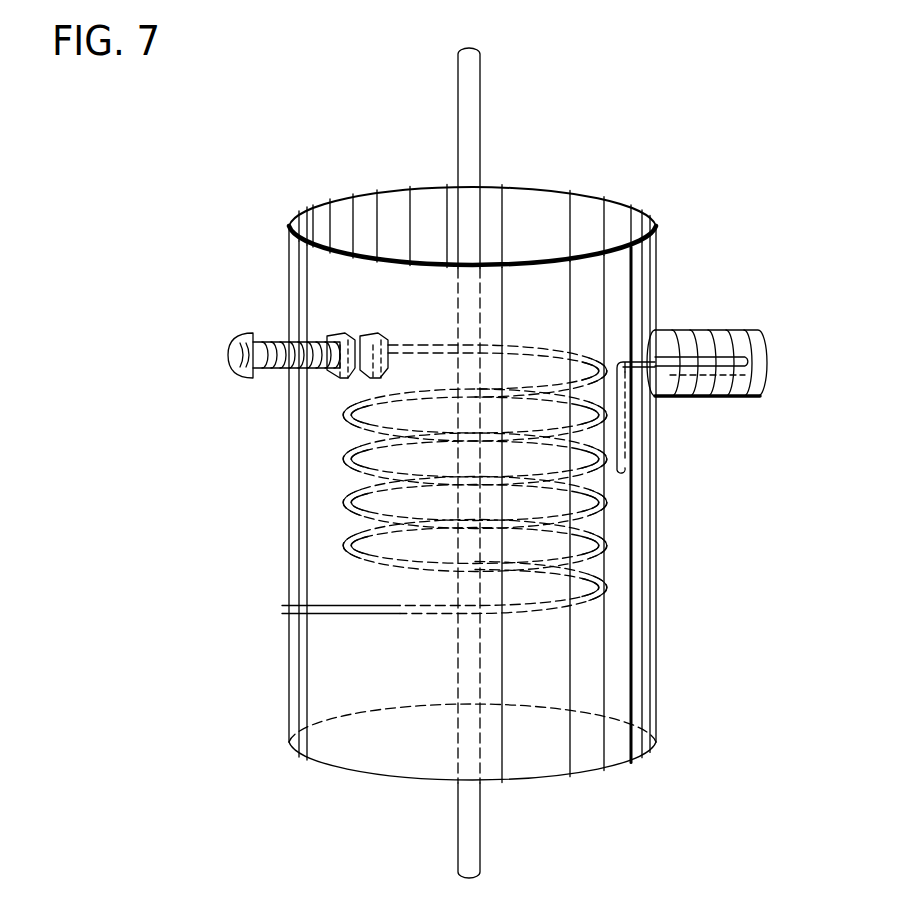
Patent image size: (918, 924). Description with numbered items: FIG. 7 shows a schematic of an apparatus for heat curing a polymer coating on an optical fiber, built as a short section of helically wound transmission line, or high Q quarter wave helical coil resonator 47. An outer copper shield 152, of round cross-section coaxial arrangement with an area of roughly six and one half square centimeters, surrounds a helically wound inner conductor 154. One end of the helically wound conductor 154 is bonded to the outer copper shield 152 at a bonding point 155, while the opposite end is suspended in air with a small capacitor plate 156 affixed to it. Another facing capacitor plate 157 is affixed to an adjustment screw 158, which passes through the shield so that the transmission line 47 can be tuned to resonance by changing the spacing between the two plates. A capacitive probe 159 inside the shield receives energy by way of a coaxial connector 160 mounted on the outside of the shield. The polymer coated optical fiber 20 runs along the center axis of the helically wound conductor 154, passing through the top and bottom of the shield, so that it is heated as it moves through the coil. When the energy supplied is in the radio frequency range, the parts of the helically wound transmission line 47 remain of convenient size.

The helical coil resonator 47 is at (325, 71).
The polymer coated optical fiber 20 is at (486, 127).
The outer copper shield 152 is at (652, 637).
The helically wound inner conductor 154 is at (578, 550).
The bonding point 155 is at (282, 610).
The capacitor plate 156 is at (374, 342).
The facing capacitor plate 157 is at (352, 348).
The adjustment screw 158 is at (225, 364).
The capacitive probe 159 is at (628, 452).
The coaxial connector 160 is at (712, 328).